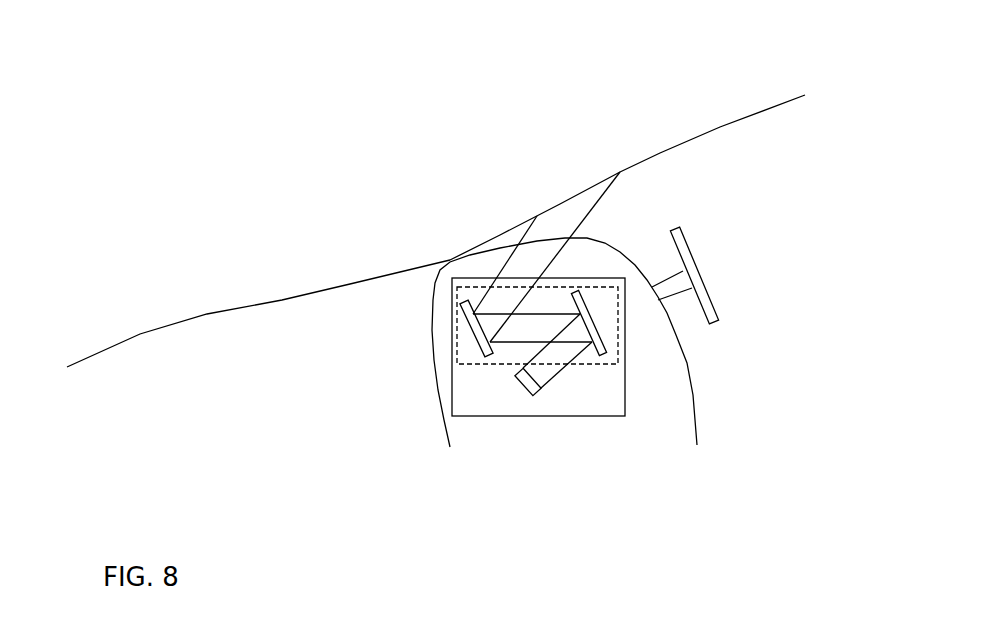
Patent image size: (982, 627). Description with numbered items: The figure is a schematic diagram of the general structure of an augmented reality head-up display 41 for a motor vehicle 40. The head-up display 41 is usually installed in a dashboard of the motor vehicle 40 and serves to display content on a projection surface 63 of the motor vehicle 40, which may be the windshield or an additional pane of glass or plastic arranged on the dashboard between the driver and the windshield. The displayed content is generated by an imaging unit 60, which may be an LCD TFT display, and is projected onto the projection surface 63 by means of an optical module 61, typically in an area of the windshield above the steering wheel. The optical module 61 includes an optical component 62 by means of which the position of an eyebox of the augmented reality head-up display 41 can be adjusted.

The motor vehicle 40 is at (282, 300).
The augmented reality head-up display 41 is at (453, 395).
The imaging unit 60 is at (530, 395).
The optical module 61 is at (602, 363).
The optical component 62 is at (463, 303).
The projection surface 63 is at (660, 152).